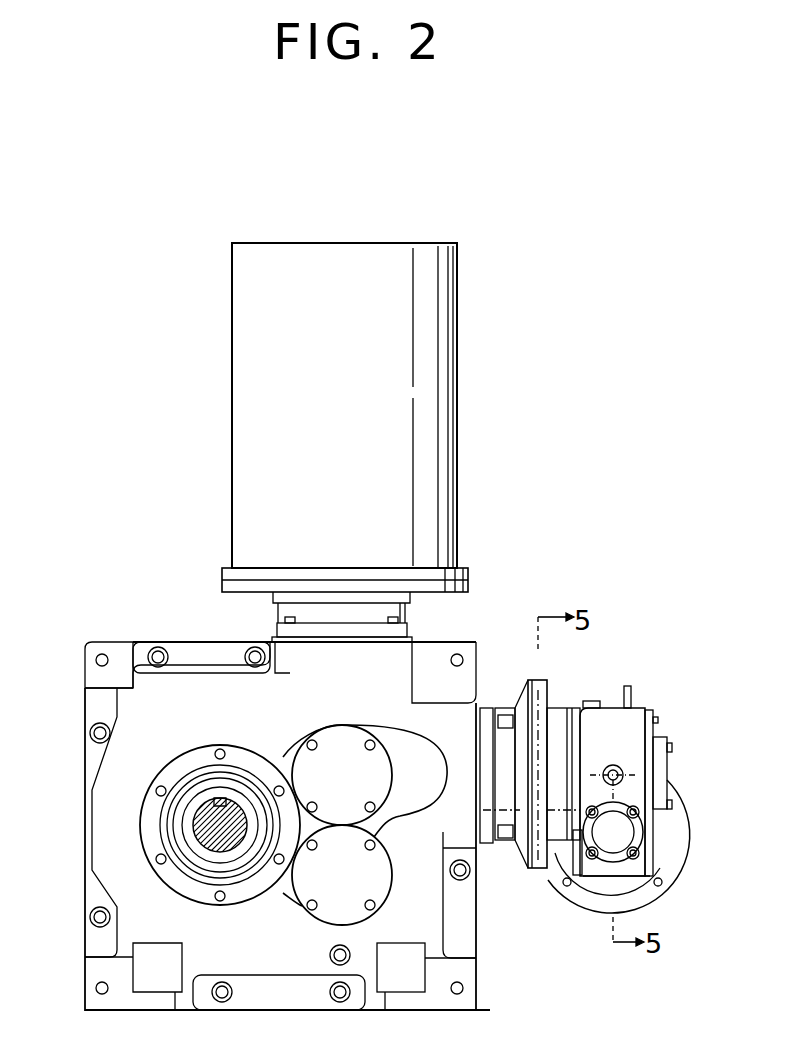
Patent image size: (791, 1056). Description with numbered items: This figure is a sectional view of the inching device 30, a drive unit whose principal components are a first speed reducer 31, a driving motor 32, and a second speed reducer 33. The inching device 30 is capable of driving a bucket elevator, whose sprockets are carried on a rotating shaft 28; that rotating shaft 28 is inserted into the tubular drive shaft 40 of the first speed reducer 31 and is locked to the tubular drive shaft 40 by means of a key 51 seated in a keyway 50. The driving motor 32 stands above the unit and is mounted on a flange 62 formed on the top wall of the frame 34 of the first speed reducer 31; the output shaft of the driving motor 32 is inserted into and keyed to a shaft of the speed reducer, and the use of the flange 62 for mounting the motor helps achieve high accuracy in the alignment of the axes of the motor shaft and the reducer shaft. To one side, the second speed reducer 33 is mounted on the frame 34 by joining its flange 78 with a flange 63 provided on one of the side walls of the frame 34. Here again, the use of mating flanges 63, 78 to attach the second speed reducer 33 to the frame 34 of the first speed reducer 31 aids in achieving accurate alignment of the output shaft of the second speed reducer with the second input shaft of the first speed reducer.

The rotating shaft 28 is at (232, 847).
The inching device 30 is at (203, 563).
The first speed reducer 31 is at (184, 637).
The driving motor 32 is at (458, 327).
The second speed reducer 33 is at (610, 706).
The frame 34 is at (143, 637).
The tubular drive shaft 40 is at (187, 824).
The keyway 50 is at (232, 797).
The key 51 is at (225, 798).
The flange 62 is at (470, 588).
The flange 63 is at (530, 708).
The flange 78 is at (548, 692).